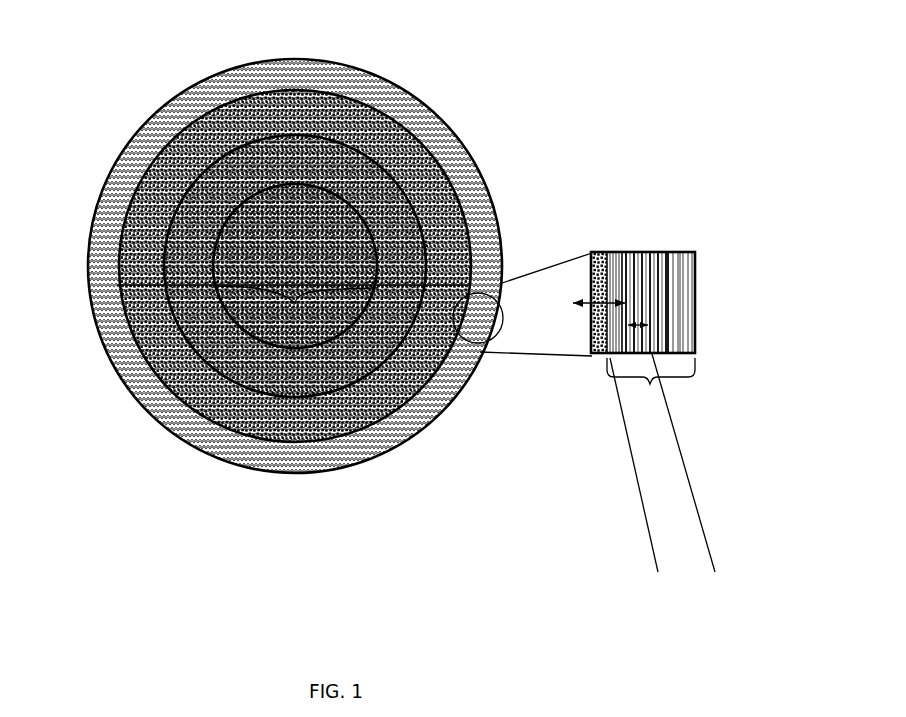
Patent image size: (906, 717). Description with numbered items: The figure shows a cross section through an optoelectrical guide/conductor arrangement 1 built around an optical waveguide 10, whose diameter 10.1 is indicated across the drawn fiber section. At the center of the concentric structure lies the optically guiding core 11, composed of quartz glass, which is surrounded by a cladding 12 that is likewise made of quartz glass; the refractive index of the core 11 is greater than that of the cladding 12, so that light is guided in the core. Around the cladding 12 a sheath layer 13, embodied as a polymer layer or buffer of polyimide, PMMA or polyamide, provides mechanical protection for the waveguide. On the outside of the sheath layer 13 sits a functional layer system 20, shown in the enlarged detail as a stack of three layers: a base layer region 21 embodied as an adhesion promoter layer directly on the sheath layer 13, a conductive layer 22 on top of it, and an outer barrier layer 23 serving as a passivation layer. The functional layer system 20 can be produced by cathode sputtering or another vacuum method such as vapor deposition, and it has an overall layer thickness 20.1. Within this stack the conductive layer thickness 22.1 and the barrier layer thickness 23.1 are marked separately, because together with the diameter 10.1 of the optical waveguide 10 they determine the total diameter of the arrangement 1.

The optoelectrical guide/conductor arrangement 1 is at (437, 330).
The optical waveguide 10 is at (293, 443).
The diameter 10.1 is at (295, 303).
The core 11 is at (337, 330).
The cladding 12 is at (337, 368).
The sheath layer 13 is at (363, 345).
The functional layer system 20 is at (437, 330).
The layer thickness 20.1 is at (643, 479).
The base layer region 21 is at (618, 251).
The conductive layer 22 is at (655, 251).
The conductive layer thickness 22.1 is at (690, 477).
The barrier layer 23 is at (690, 251).
The barrier layer thickness 23.1 is at (733, 427).